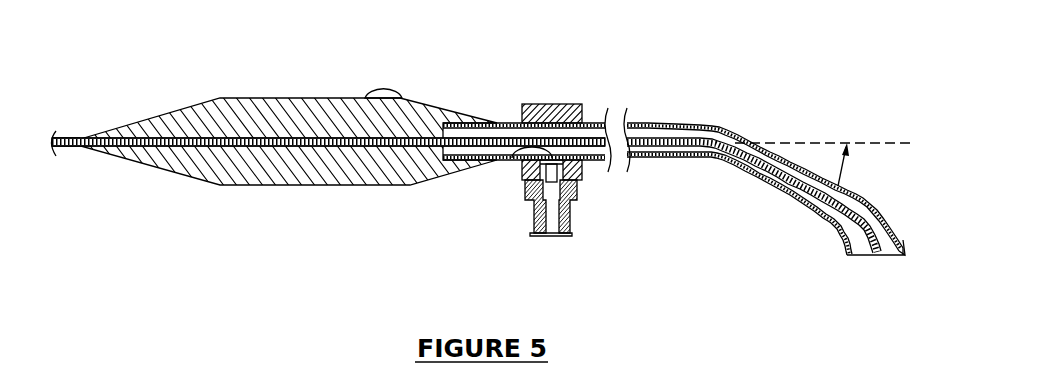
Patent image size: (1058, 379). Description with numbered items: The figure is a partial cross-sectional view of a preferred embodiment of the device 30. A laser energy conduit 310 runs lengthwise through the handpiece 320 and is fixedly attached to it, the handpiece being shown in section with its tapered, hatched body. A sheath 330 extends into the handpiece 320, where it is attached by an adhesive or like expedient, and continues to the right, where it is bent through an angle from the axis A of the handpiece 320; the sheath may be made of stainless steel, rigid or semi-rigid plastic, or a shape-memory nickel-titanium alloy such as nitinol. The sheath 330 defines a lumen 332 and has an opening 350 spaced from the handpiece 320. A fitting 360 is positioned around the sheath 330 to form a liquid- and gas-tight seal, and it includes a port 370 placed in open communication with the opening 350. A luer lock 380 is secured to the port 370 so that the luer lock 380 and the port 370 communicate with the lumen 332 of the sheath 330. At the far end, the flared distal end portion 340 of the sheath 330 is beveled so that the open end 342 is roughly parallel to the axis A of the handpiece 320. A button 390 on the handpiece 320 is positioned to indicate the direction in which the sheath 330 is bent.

The device 30 is at (298, 226).
The laser energy conduit 310 is at (63, 140).
The handpiece 320 is at (233, 122).
The sheath 330 is at (725, 127).
The lumen 332 is at (663, 133).
The flared distal end portion 340 is at (845, 254).
The open end 342 is at (888, 258).
The opening 350 is at (517, 154).
The fitting 360 is at (552, 104).
The port 370 is at (582, 176).
The luer lock 380 is at (572, 232).
The button 390 is at (388, 86).
The axis A is at (834, 143).